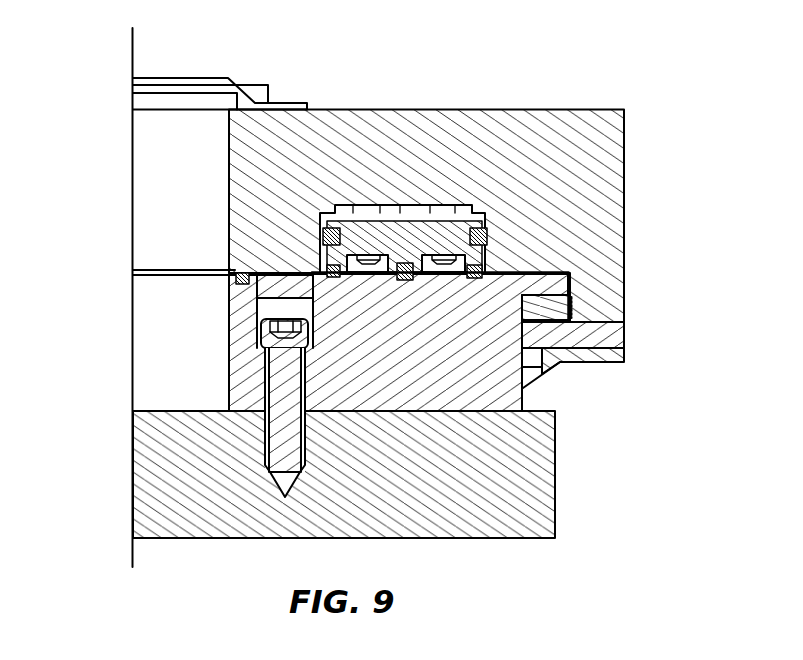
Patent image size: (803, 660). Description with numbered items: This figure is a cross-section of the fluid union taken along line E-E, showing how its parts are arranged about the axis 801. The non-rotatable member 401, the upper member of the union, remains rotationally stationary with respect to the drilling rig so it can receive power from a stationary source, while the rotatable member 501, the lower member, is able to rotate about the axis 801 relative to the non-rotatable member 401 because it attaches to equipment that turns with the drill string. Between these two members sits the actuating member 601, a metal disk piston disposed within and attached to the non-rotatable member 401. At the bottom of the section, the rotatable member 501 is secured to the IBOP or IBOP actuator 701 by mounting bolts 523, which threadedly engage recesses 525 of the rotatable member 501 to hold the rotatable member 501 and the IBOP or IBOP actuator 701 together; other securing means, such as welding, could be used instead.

The axis 801 is at (130, 57).
The non-rotatable member 401 is at (241, 170).
The rotatable member 501 is at (508, 408).
The actuating member 601 is at (388, 218).
The IBOP or IBOP actuator 701 is at (538, 473).
The mounting bolts 523 is at (279, 424).
The recesses 525 is at (280, 488).